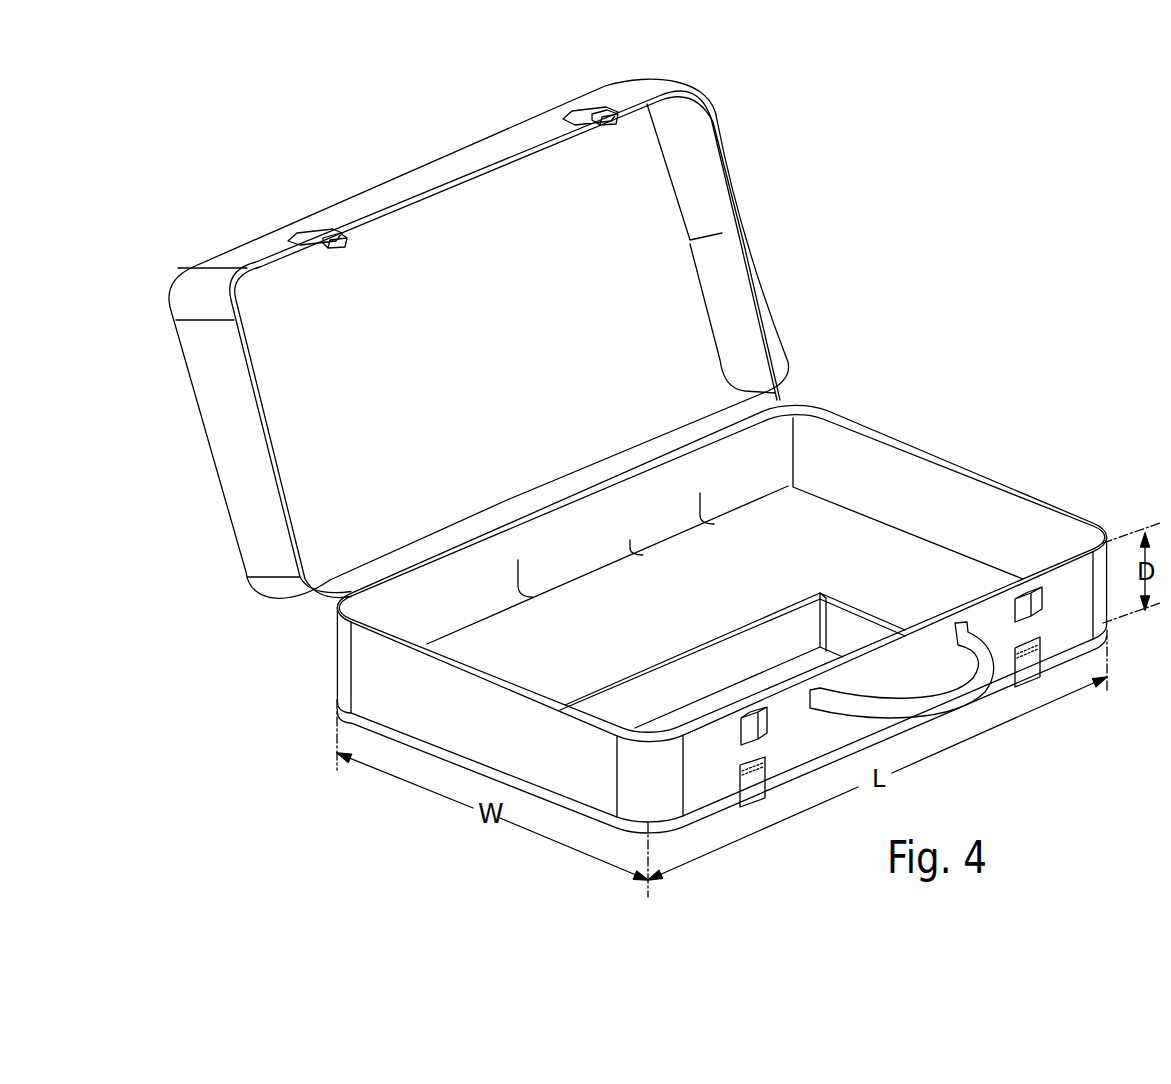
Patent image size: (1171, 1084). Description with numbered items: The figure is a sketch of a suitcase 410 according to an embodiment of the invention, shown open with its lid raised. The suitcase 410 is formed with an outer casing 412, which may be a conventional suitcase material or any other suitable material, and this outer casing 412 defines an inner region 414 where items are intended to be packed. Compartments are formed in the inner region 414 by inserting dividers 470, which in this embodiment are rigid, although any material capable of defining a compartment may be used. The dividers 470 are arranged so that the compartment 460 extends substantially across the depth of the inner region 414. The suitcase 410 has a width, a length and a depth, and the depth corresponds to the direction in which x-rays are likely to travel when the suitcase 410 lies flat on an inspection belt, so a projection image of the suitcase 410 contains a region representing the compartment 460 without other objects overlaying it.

The suitcase 410 is at (761, 223).
The outer casing 412 is at (342, 651).
The inner region 414 is at (903, 466).
The compartment 460 is at (720, 654).
The dividers 470 is at (856, 607).